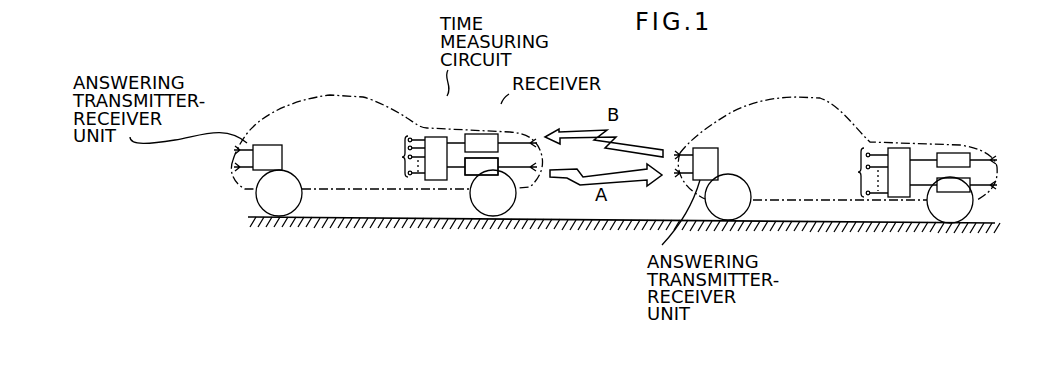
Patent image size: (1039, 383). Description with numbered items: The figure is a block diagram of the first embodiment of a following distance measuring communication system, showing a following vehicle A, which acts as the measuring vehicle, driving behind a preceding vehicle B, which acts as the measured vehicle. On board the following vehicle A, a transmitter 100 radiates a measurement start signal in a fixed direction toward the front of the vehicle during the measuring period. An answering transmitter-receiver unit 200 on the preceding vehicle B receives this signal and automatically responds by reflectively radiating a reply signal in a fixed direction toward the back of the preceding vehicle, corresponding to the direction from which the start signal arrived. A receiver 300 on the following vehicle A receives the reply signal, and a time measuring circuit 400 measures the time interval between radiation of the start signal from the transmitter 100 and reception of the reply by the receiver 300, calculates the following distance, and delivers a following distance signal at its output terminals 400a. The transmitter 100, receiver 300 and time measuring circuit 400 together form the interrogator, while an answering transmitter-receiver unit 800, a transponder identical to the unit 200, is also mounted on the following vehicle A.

The transmitter 100 is at (467, 175).
The answering transmitter-receiver unit 200 is at (712, 148).
The receiver 300 is at (477, 134).
The time measuring circuit 400 is at (437, 137).
The output terminals 400a is at (402, 157).
The answering transmitter-receiver unit 800 is at (258, 145).
The following vehicle A is at (397, 110).
The preceding vehicle B is at (858, 113).